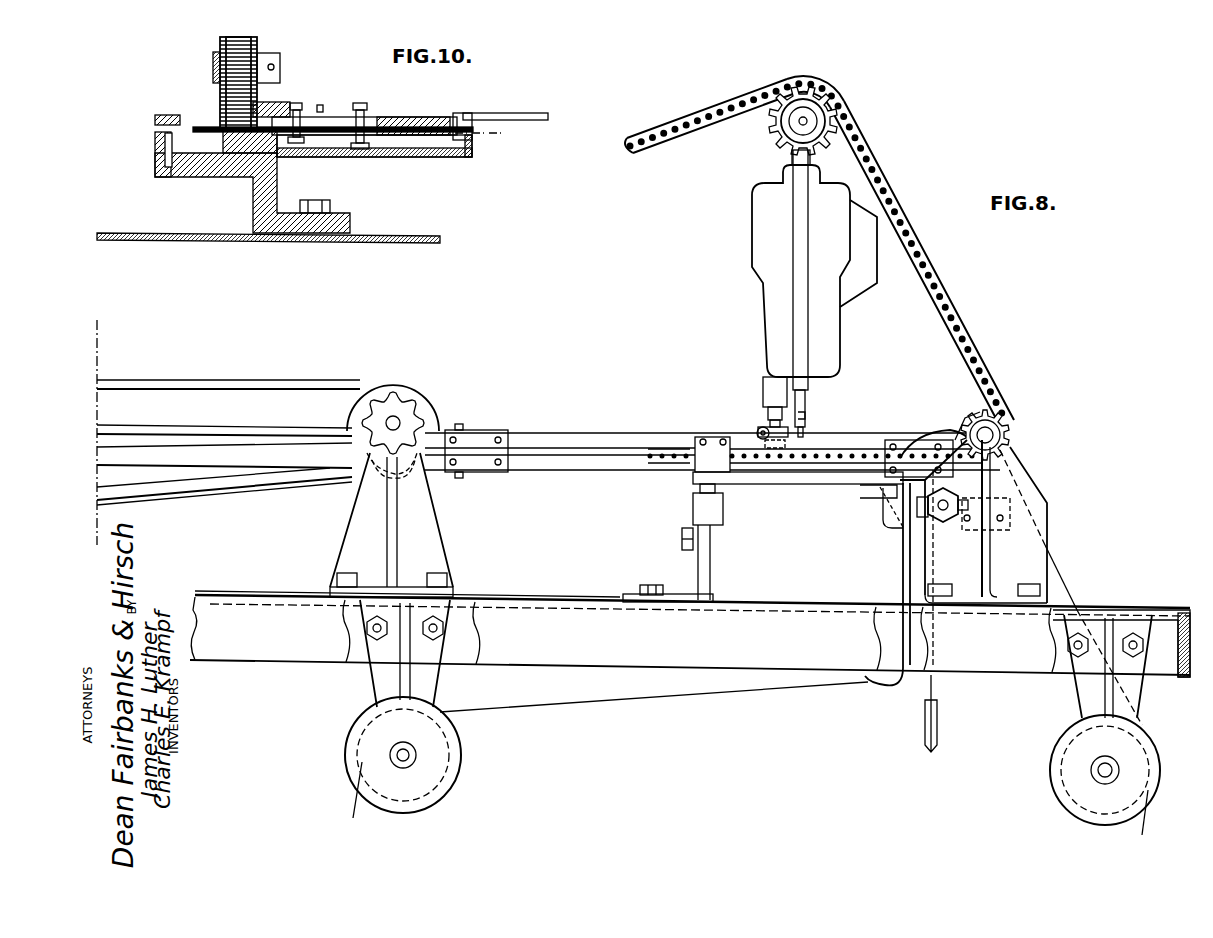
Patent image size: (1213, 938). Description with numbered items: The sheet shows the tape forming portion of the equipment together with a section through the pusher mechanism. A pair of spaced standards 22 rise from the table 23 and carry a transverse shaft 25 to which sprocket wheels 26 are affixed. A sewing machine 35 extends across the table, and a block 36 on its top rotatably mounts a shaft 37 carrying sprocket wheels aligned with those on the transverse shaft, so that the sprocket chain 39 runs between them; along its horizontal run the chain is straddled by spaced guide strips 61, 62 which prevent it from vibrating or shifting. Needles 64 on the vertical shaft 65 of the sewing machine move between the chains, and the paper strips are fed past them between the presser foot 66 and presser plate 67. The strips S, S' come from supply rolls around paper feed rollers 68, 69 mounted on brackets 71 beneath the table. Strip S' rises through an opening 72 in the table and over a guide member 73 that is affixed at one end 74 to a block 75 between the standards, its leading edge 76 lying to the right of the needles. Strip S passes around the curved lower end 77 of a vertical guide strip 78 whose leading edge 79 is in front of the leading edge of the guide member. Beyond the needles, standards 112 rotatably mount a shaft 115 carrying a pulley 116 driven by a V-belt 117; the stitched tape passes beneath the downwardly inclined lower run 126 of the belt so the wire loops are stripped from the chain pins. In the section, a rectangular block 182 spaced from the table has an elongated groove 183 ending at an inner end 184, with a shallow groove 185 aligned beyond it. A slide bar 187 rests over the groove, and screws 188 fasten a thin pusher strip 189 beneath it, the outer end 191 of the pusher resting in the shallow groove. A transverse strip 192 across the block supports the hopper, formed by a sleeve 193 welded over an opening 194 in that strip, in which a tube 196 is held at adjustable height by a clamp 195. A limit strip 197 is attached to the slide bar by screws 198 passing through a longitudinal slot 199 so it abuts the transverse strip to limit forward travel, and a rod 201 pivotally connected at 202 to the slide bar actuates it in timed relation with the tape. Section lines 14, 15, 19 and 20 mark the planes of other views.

In FIG. 10, the section line 14-14 / base block 14 is at (236, 37).
In FIG. 10, the section line 15- 15 is at (345, 101).
In FIG. 8, the section line 19- 19 is at (962, 398).
In FIG. 8, the section line 20- 20 is at (536, 410).
In FIG. 8, the standard 22 is at (1025, 540).
In FIG. 8, the table 23 is at (1112, 612).
In FIG. 8, the transverse shaft 25 is at (1000, 437).
In FIG. 8, the sprocket wheel 26 is at (993, 410).
In FIG. 8, the sewing machine 35 is at (752, 235).
In FIG. 8, the block 36 is at (790, 163).
In FIG. 8, the shaft 37 is at (790, 124).
In FIG. 8, the sprocket chain 39 is at (705, 112).
In FIG. 8, the guide strip 61 is at (634, 432).
In FIG. 8, the guide strip 62 is at (645, 471).
In FIG. 8, the needle 64 is at (800, 434).
In FIG. 8, the vertical shaft 65 is at (806, 400).
In FIG. 8, the presser foot 66 is at (765, 468).
In FIG. 8, the presser plate 67 is at (783, 478).
In FIG. 8, the paper feed roller 68 is at (435, 768).
In FIG. 8, the paper feed roller 69 is at (1060, 765).
In FIG. 8, the bracket 71 is at (378, 685).
In FIG. 8, the opening 72 is at (1068, 600).
In FIG. 8, the guide member 73 is at (917, 433).
In FIG. 8, the affixed end 74 is at (1010, 508).
In FIG. 8, the block 75 is at (997, 535).
In FIG. 8, the leading edge 76 is at (852, 472).
In FIG. 8, the curved lower end 77 is at (893, 690).
In FIG. 8, the vertical guide strip 78 is at (902, 560).
In FIG. 8, the leading edge 79 is at (830, 470).
In FIG. 8, the standard 112 is at (432, 538).
In FIG. 8, the shaft 115 is at (394, 416).
In FIG. 8, the pulley 116 is at (428, 388).
In FIG. 8, the V-belt 117 is at (285, 372).
In FIG. 8, the lower run 126 is at (246, 482).
In FIG. 10, the block 182 is at (468, 150).
In FIG. 10, the elongated rectangular groove 183 is at (425, 150).
In FIG. 10, the inner end 184 is at (290, 140).
In FIG. 10, the shallow groove 185 is at (240, 160).
In FIG. 10, the slide bar 187 is at (440, 118).
In FIG. 10, the screw 188 is at (385, 148).
In FIG. 10, the pusher strip 189 is at (340, 140).
In FIG. 10, the outer end 191 is at (200, 178).
In FIG. 10, the transverse strip 192 is at (270, 100).
In FIG. 10, the sleeve 193 is at (218, 92).
In FIG. 10, the opening 194 is at (282, 82).
In FIG. 10, the clamp 195 is at (278, 47).
In FIG. 10, the tube 196 is at (222, 45).
In FIG. 10, the strip 197 is at (395, 118).
In FIG. 10, the screw 198 is at (365, 104).
In FIG. 10, the longitudinal slot 199 is at (300, 104).
In FIG. 10, the rod 201 is at (545, 117).
In FIG. 10, the pivotal connection 202 is at (478, 113).
In FIG. 8, the strip S is at (610, 750).
In FIG. 8, the strip S' is at (1170, 812).